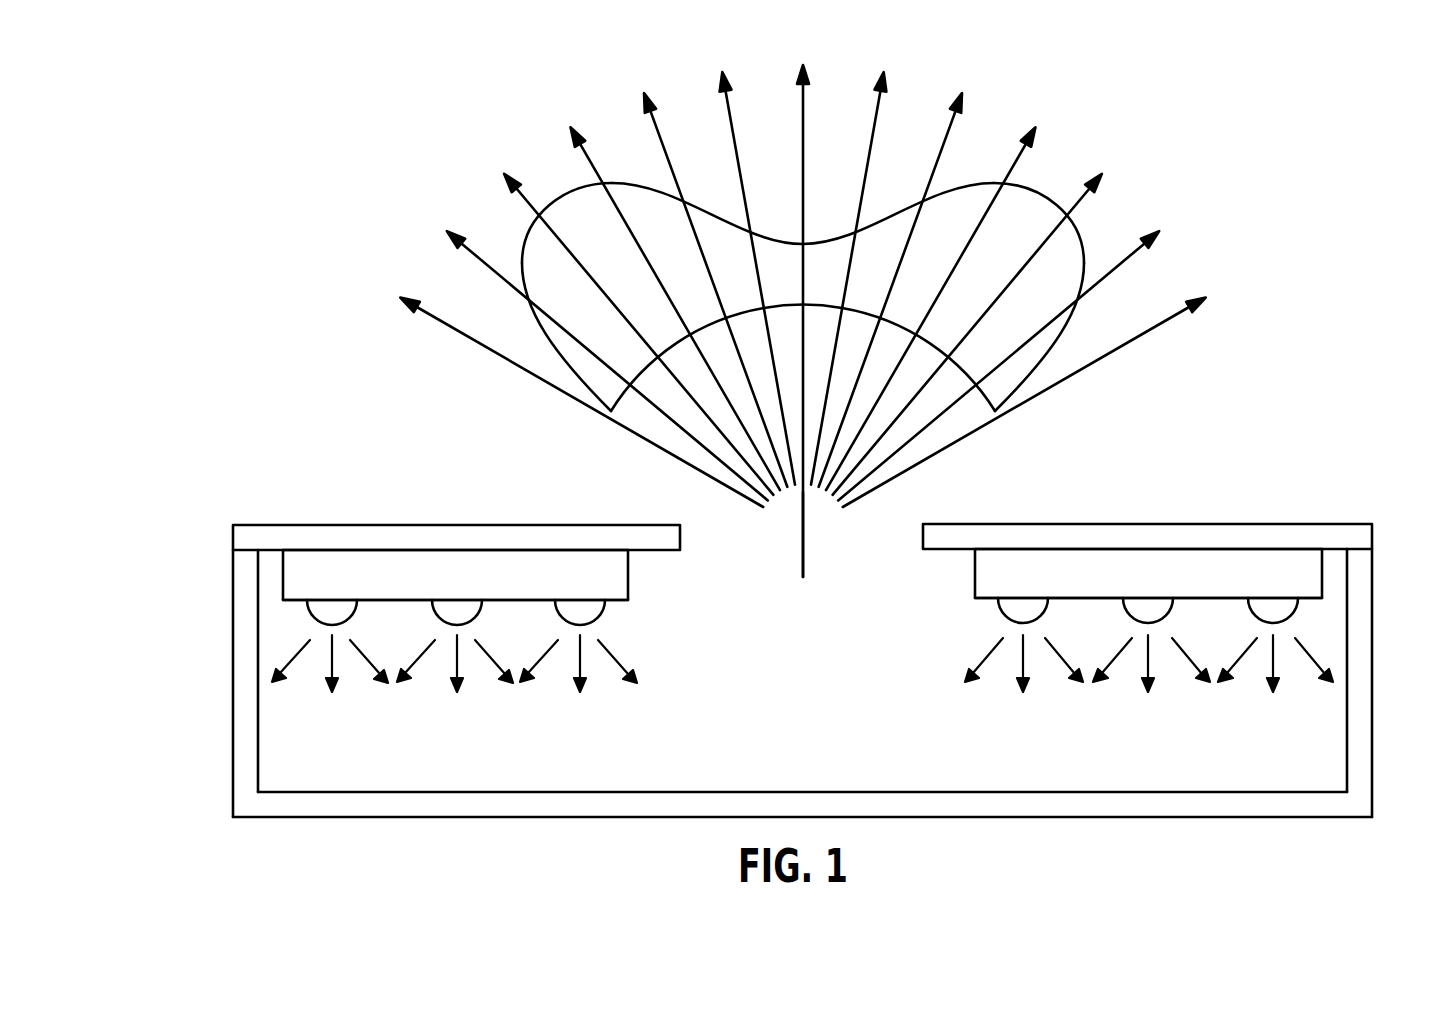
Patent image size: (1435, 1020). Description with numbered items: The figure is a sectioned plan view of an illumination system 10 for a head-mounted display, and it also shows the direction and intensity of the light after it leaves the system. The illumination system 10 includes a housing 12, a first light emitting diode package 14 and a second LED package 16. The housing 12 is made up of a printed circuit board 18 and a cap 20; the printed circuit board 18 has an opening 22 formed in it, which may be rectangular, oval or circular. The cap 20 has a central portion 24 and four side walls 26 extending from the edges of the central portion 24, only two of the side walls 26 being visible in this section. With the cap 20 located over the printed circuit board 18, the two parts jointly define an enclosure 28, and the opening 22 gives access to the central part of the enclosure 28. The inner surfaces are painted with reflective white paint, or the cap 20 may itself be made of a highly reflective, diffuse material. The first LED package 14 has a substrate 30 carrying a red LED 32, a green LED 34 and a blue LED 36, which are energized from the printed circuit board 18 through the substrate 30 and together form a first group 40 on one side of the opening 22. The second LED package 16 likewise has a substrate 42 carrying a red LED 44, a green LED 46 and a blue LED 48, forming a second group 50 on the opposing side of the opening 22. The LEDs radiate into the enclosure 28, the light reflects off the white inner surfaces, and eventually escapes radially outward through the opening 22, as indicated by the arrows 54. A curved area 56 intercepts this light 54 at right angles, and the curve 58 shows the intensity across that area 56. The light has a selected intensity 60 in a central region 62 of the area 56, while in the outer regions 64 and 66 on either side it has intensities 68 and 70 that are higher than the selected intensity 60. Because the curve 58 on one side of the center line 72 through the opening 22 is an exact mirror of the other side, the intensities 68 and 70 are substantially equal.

The illumination system 10 is at (403, 443).
The housing 12 is at (403, 503).
The first light emitting diode (LED) package 14 is at (650, 578).
The second LED package 16 is at (953, 578).
The printed circuit board 18 is at (540, 525).
The cap 20 is at (803, 691).
The opening 22 is at (680, 533).
The central portion 24 is at (918, 815).
The side walls 26 is at (236, 663).
The enclosure 28 is at (818, 750).
The substrate 30 is at (623, 587).
The red LED 32 is at (357, 607).
The green LED 34 is at (482, 607).
The blue LED 36 is at (607, 607).
The first group 40 is at (518, 722).
The substrate 42 is at (978, 587).
The red LED 44 is at (1258, 607).
The green LED 46 is at (1127, 607).
The blue LED 48 is at (1003, 608).
The second group 50 is at (1087, 722).
The arrows 54 is at (447, 320).
The curved area 56 is at (803, 283).
The curve 58 is at (970, 184).
The selected intensity 60 is at (822, 239).
The central region 62 is at (820, 304).
The outer region 64 is at (670, 348).
The outer region 66 is at (940, 348).
The intensity 68 is at (555, 193).
The intensity 70 is at (1027, 183).
The center line 72 is at (805, 552).